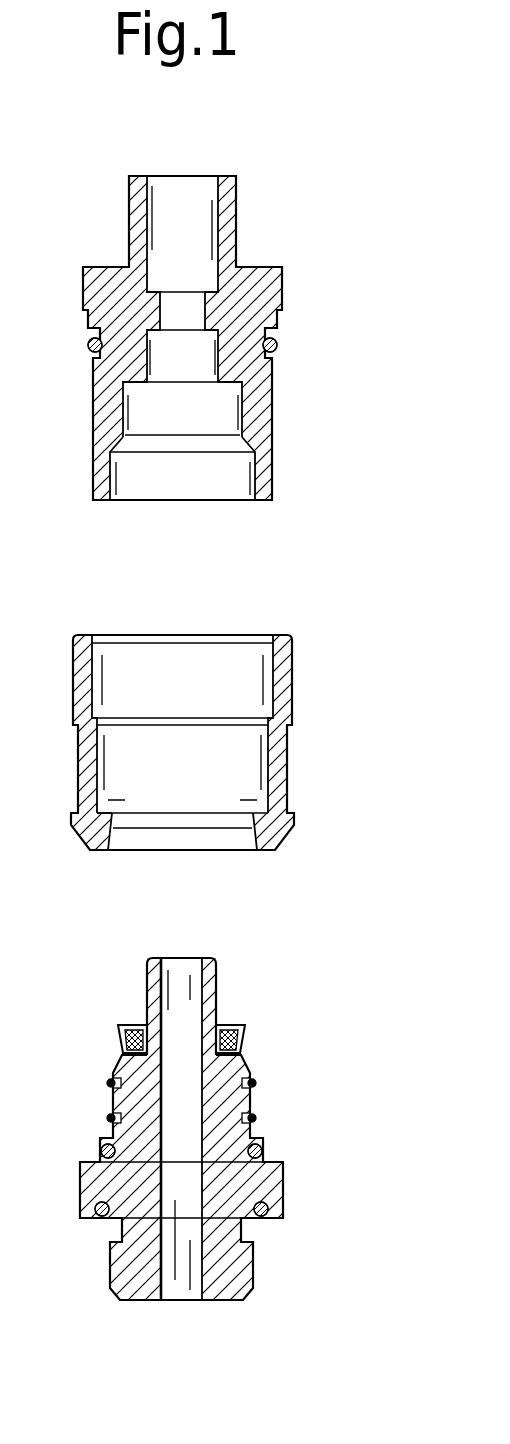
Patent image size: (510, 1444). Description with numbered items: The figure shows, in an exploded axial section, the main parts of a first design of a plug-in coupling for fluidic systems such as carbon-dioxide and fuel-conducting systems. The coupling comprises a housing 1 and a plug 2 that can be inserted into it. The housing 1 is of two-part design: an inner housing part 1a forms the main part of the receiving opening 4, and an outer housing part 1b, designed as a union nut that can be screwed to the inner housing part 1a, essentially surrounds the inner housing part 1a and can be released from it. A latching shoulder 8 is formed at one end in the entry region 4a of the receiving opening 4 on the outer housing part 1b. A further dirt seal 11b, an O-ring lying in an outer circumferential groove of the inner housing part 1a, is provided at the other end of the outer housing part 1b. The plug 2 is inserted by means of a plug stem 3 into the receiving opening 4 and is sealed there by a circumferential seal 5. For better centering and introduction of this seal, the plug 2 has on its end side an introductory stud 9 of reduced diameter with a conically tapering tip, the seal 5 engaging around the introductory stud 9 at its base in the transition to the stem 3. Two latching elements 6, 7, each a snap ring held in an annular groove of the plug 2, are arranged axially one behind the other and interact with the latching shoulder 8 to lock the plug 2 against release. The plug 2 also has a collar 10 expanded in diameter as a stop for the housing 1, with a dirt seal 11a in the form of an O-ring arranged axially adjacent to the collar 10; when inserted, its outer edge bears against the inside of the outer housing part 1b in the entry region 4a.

The housing 1 is at (243, 548).
The inner housing part 1a is at (235, 373).
The outer housing part 1b is at (215, 753).
The receiving opening 4 is at (148, 474).
The entry region 4a is at (219, 845).
The latching shoulder 8 is at (105, 812).
The dirt seal 11b is at (270, 346).
The plug 2 is at (223, 1141).
The plug stem 3 is at (228, 1072).
The introductory stud 9 is at (217, 973).
The circumferential seal 5 is at (247, 1027).
The latching element 6 is at (254, 1083).
The latching element 7 is at (254, 1119).
The dirt seal 11a is at (258, 1149).
The collar 10 is at (270, 1185).